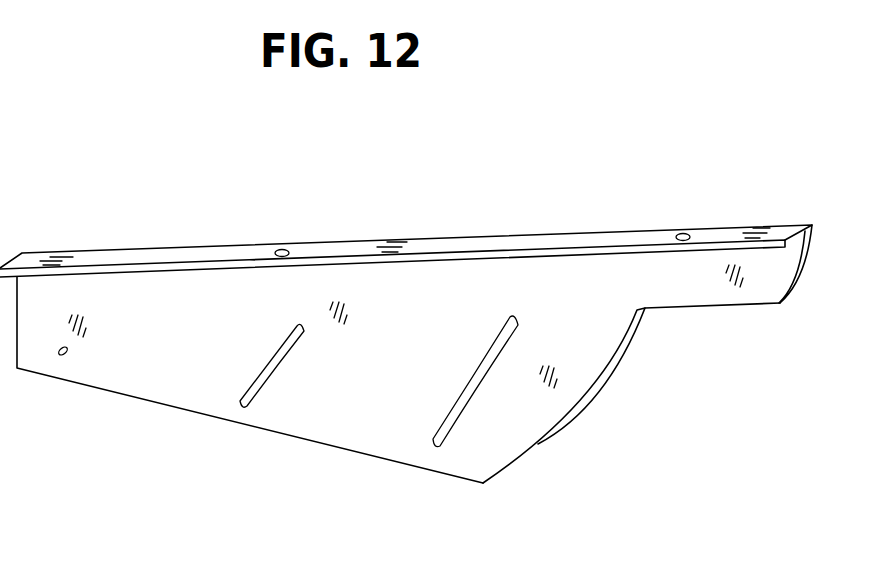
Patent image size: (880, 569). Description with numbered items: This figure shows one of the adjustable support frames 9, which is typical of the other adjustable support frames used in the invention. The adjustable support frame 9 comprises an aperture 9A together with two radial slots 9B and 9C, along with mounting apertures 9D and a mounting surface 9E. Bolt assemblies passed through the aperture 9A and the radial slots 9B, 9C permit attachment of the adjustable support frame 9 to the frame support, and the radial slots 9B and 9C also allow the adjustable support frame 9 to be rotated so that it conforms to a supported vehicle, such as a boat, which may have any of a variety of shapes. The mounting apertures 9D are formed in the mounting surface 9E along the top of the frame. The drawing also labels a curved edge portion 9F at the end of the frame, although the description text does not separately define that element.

The adjustable support frame 9 is at (770, 268).
The aperture 9A is at (60, 358).
The radial slot 9B is at (244, 404).
The radial slot 9C is at (435, 447).
The mounting aperture 9D is at (283, 248).
The mounting surface 9E is at (37, 256).
The curved lip 9F is at (693, 308).